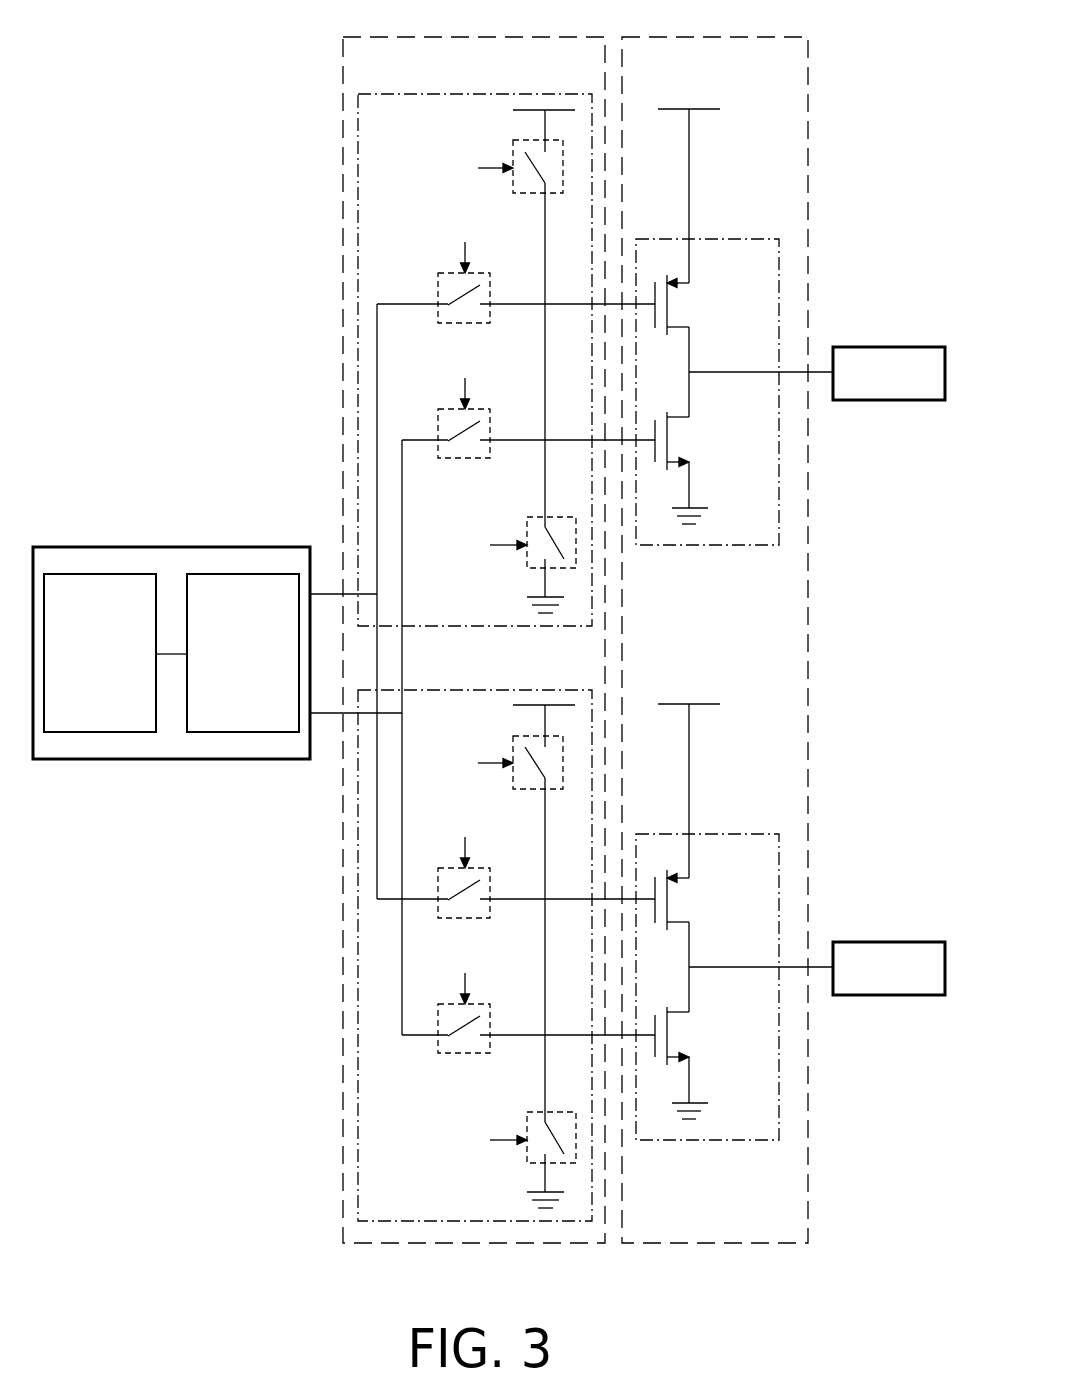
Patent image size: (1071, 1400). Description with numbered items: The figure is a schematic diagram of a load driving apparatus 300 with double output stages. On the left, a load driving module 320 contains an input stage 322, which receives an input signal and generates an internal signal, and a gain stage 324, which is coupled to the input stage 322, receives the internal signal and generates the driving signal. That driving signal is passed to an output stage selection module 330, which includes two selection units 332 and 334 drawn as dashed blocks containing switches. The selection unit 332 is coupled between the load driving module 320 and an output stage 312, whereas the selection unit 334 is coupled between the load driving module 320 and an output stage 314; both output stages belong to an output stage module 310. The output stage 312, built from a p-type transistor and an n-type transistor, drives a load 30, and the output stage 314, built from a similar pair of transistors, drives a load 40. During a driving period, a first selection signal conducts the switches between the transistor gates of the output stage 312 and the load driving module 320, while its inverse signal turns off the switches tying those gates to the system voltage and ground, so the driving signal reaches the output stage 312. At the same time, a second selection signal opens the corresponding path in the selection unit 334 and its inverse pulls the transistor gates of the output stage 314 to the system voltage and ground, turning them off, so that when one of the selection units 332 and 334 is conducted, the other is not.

The load driving apparatus 300 is at (927, 1264).
The output stage module 310 is at (720, 37).
The output stage 312 is at (714, 239).
The output stage 314 is at (714, 834).
The load driving module 320 is at (217, 662).
The input stage 322 is at (98, 733).
The gain stage 324 is at (241, 733).
The output stage selection module 330 is at (463, 37).
The selection unit 332 is at (462, 94).
The selection unit 334 is at (462, 690).
The load 30 is at (890, 347).
The load 40 is at (890, 942).